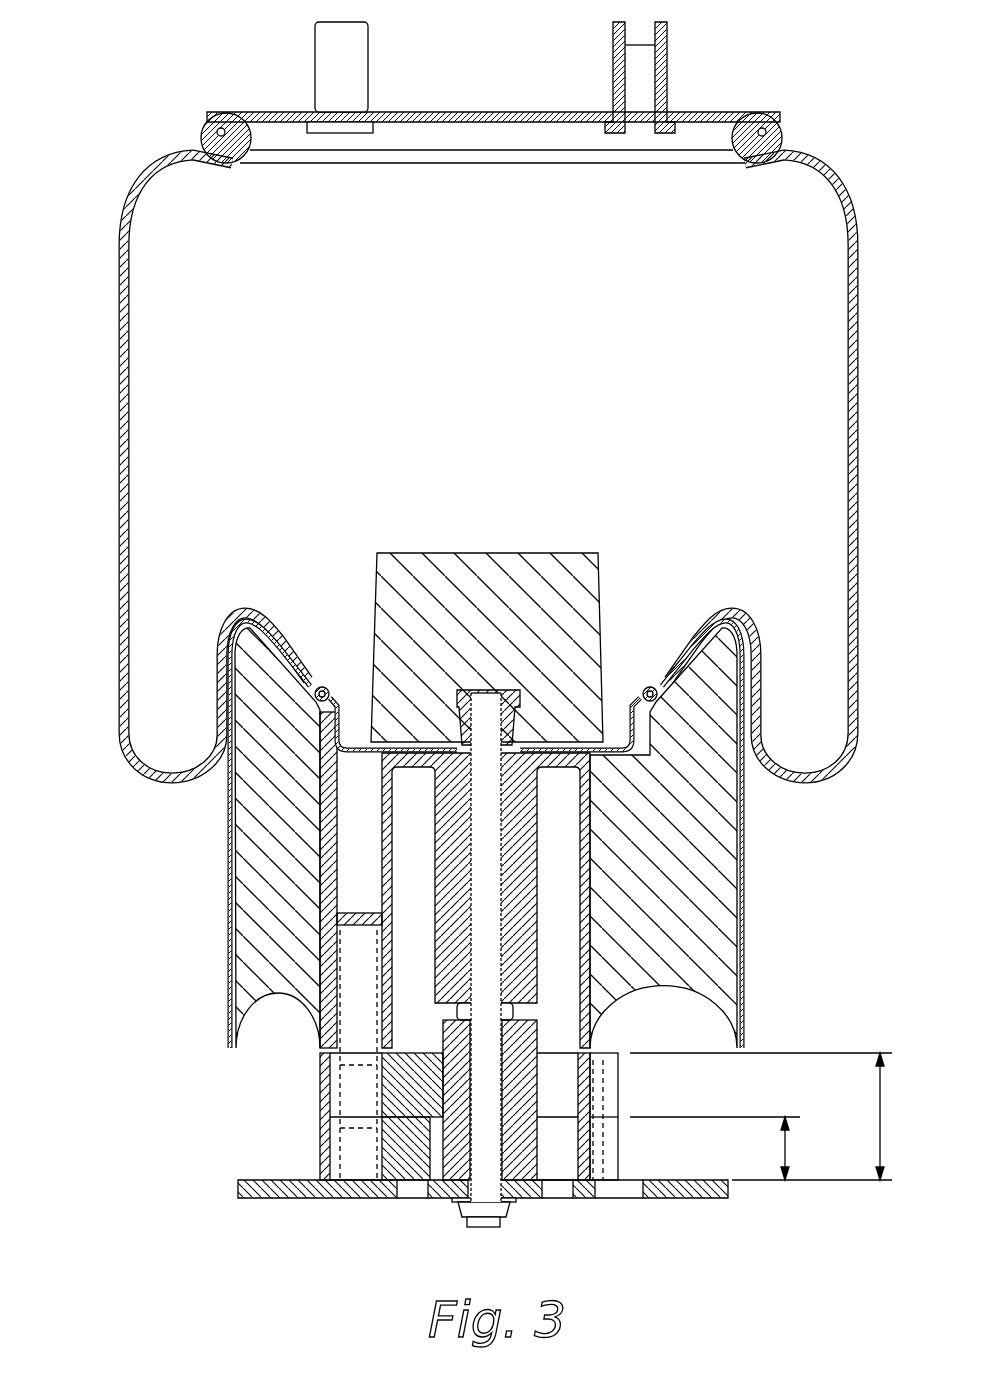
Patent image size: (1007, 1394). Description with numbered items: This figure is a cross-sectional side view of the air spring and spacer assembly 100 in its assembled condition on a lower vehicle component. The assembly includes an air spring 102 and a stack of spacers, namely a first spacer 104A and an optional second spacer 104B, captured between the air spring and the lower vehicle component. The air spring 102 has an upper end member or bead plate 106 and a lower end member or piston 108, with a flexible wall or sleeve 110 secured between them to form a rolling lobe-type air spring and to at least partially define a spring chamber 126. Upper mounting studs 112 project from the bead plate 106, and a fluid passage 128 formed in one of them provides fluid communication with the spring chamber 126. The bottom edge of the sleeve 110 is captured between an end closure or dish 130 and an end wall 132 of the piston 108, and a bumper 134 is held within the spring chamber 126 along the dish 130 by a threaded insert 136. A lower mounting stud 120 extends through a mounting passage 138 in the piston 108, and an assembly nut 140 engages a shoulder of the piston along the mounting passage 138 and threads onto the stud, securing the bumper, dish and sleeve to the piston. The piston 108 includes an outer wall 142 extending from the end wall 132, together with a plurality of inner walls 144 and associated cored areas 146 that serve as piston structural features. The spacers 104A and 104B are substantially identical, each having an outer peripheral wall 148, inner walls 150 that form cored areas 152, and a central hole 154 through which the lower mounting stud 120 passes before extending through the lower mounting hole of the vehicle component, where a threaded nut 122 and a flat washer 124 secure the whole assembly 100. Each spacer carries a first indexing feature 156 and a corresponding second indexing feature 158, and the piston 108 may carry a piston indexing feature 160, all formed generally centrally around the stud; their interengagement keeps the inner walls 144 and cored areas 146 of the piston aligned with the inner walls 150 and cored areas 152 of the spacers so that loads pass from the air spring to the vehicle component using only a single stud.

The air spring and spacer assembly 100 is at (135, 112).
The air spring 102 is at (127, 772).
The first spacer 104A is at (408, 1111).
The second spacer 104B is at (292, 1128).
The bead plate 106 is at (752, 118).
The piston 108 is at (745, 852).
The flexible wall or sleeve 110 is at (862, 545).
The upper mounting stud 112 is at (357, 72).
The lower mounting stud 120 is at (463, 855).
The threaded nut 122 is at (482, 1208).
The flat washer 124 is at (510, 1200).
The spring chamber 126 is at (488, 309).
The fluid passage 128 is at (648, 72).
The end closure or dish 130 is at (628, 670).
The end wall 132 is at (668, 700).
The bumper 134 is at (517, 551).
The threaded insert 136 is at (473, 686).
The mounting passage 138 is at (380, 875).
The assembly nut 140 is at (560, 985).
The outer wall 142 is at (325, 905).
The inner walls 144 is at (540, 817).
The cored areas or spaces 146 is at (355, 780).
The outer peripheral wall 148 is at (320, 1065).
The inner walls 150 is at (377, 1087).
The cored areas or spaces 152 is at (562, 1153).
The hole 154 is at (390, 1065).
The first indexing feature 156 is at (600, 1030).
The second indexing feature 158 is at (440, 1195).
The piston indexing feature 160 is at (525, 1015).